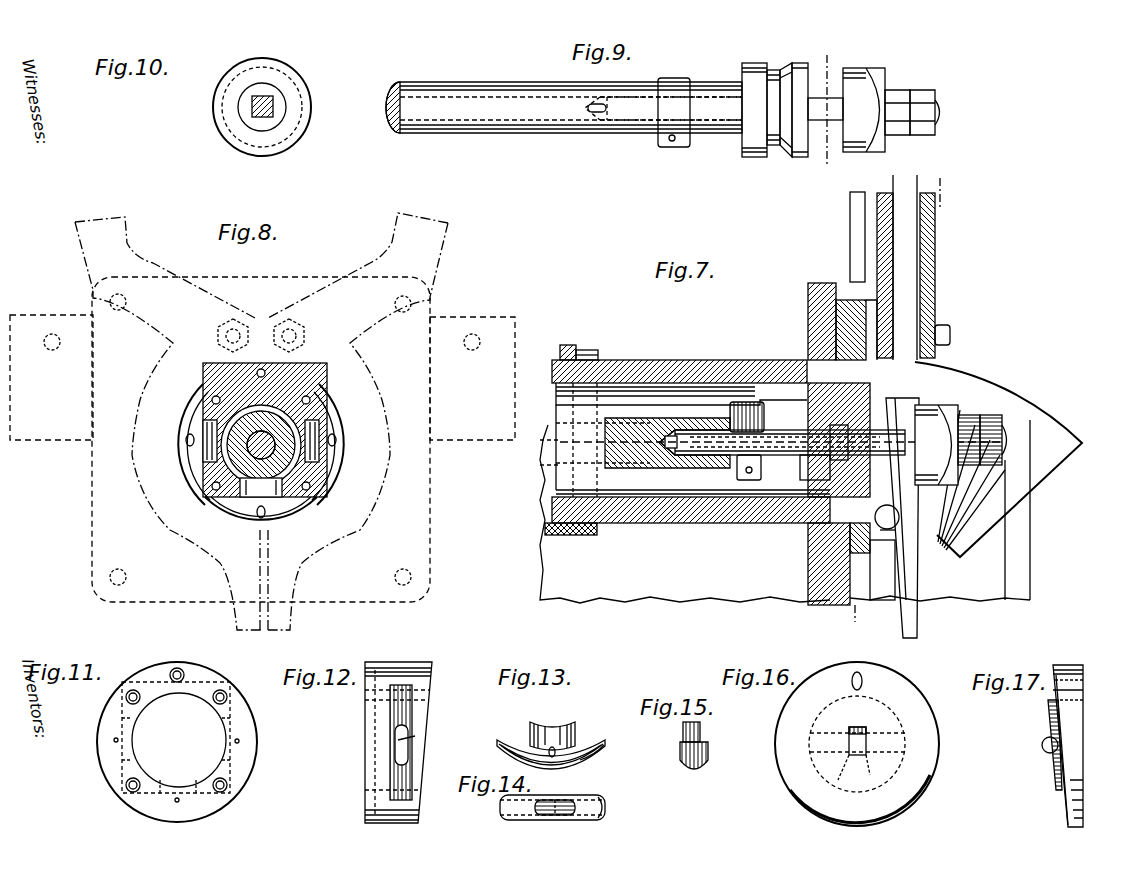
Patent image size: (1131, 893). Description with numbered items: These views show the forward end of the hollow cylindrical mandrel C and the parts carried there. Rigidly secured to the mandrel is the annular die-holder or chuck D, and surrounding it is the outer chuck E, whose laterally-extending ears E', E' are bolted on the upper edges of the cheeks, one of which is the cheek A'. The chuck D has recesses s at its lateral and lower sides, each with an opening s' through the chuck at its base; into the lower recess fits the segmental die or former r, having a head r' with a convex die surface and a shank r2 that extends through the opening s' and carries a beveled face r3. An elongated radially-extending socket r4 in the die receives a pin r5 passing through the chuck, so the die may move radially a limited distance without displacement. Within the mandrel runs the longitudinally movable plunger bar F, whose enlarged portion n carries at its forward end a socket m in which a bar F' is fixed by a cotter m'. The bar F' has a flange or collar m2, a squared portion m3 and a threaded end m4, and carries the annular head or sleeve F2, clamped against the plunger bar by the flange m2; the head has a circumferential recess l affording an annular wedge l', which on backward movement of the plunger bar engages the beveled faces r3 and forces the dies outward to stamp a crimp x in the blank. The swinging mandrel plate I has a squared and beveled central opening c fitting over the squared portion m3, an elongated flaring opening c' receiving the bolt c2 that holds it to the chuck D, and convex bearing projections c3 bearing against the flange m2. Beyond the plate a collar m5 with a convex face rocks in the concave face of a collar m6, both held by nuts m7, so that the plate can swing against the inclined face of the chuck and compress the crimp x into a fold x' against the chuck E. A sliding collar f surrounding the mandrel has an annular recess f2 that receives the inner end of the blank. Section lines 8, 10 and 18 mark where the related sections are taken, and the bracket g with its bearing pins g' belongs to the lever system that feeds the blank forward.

In FIG. 9, the plunger bar F is at (564, 123).
In FIG. 7, the plunger bar F is at (780, 493).
In FIG. 9, the enlarged portion n is at (479, 128).
In FIG. 9, the bar F' is at (663, 75).
In FIG. 7, the bar F' is at (785, 497).
In FIG. 9, the cotter m' is at (667, 127).
In FIG. 7, the cotter m' is at (769, 504).
In FIG. 9, the annular head F2 is at (740, 158).
In FIG. 7, the annular head F2 is at (812, 497).
In FIG. 9, the circumferential recess l is at (773, 88).
In FIG. 9, the annular wedge l' is at (773, 129).
In FIG. 9, the flange m2 is at (801, 160).
In FIG. 7, the flange m2 is at (950, 415).
In FIG. 9, the squared portion m3 is at (835, 118).
In FIG. 9, the section line 10 is at (848, 56).
In FIG. 9, the collar m5 is at (856, 72).
In FIG. 9, the collar m6 is at (889, 74).
In FIG. 9, the threaded end m4 is at (940, 112).
In FIG. 9, the section line 18 is at (960, 172).
In FIG. 7, the mandrel C is at (678, 358).
In FIG. 7, the sliding collar f is at (570, 345).
In FIG. 7, the annular recess f2 is at (603, 352).
In FIG. 7, the socket m is at (739, 405).
In FIG. 7, the chuck D is at (815, 352).
In FIG. 8, the chuck D is at (305, 385).
In FIG. 11, the chuck D is at (245, 768).
In FIG. 7, the chuck E is at (874, 267).
In FIG. 8, the chuck E is at (261, 421).
In FIG. 8, the ears E' is at (262, 355).
In FIG. 7, the elongated opening c' is at (902, 531).
In FIG. 16, the elongated opening c' is at (884, 661).
In FIG. 7, the bolt c2 is at (885, 510).
In FIG. 16, the bolt c2 is at (905, 737).
In FIG. 7, the crimp x is at (884, 550).
In FIG. 7, the fold x' is at (968, 496).
In FIG. 7, the cheek A' is at (998, 496).
In FIG. 7, the nuts m7 is at (992, 425).
In FIG. 7, the section line 8 is at (880, 628).
In FIG. 8, the bracket g is at (176, 444).
In FIG. 8, the bearing pins g' is at (341, 444).
In FIG. 8, the segmental die r is at (261, 519).
In FIG. 13, the segmental die r is at (550, 747).
In FIG. 14, the segmental die r is at (552, 822).
In FIG. 11, the pin r5 is at (114, 740).
In FIG. 12, the recesses s is at (398, 738).
In FIG. 12, the opening s' is at (429, 724).
In FIG. 13, the shank r2 is at (535, 728).
In FIG. 14, the shank r2 is at (548, 802).
In FIG. 13, the beveled face r3 is at (556, 728).
In FIG. 14, the beveled face r3 is at (557, 814).
In FIG. 15, the beveled face r3 is at (698, 726).
In FIG. 13, the socket r4 is at (555, 757).
In FIG. 13, the head r' is at (602, 759).
In FIG. 14, the head r' is at (611, 821).
In FIG. 15, the head r' is at (700, 769).
In FIG. 16, the swinging mandrel plate I is at (912, 765).
In FIG. 17, the swinging mandrel plate I is at (1076, 668).
In FIG. 16, the central opening c is at (876, 724).
In FIG. 16, the bearing projections c3 is at (854, 775).
In FIG. 17, the bearing projections c3 is at (1042, 752).